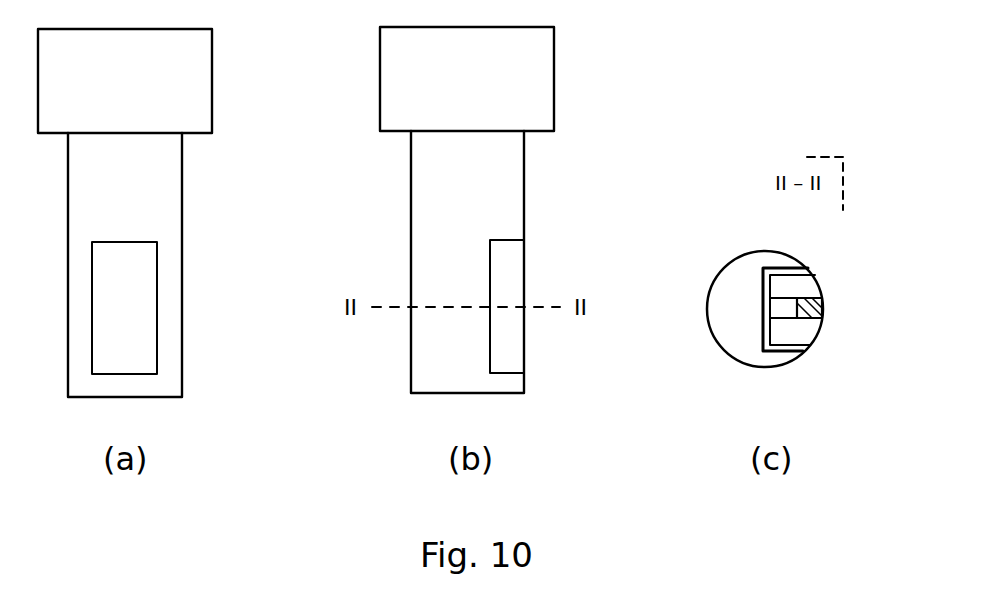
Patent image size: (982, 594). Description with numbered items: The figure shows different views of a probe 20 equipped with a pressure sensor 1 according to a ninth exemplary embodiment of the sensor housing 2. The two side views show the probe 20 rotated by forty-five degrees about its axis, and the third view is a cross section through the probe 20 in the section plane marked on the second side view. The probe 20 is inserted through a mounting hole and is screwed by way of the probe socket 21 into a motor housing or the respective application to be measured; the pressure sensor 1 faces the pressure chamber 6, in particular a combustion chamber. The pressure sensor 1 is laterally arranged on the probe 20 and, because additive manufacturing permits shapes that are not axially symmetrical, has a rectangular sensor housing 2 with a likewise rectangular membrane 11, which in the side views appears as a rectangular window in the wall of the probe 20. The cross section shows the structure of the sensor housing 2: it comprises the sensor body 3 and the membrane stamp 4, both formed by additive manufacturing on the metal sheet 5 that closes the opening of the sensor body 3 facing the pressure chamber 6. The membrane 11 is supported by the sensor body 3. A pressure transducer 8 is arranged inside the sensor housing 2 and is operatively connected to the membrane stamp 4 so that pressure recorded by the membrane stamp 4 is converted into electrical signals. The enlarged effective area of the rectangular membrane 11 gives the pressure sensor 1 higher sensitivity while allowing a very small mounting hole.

The pressure sensor 1 is at (746, 284).
The sensor housing 2 is at (752, 333).
The sensor body 3 is at (786, 269).
The membrane stamp 4 is at (810, 318).
The metal sheet 5 is at (823, 311).
The pressure chamber 6 is at (325, 212).
The pressure transducer 8 is at (788, 310).
The membrane 11 is at (140, 297).
The probe 20 is at (170, 218).
The probe socket 21 is at (197, 104).